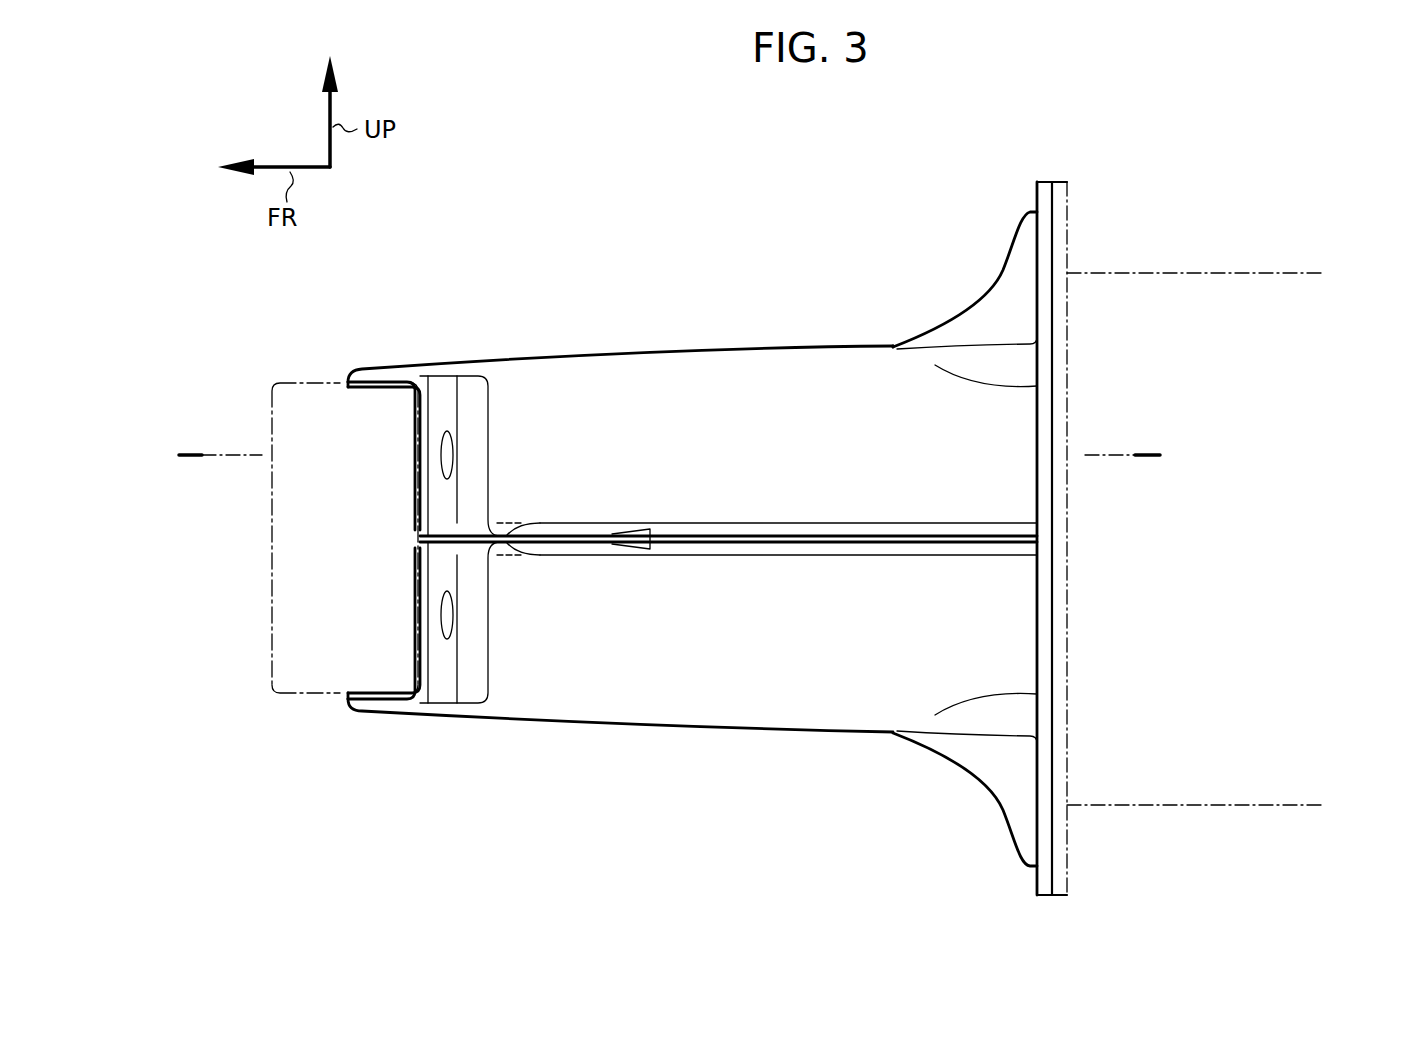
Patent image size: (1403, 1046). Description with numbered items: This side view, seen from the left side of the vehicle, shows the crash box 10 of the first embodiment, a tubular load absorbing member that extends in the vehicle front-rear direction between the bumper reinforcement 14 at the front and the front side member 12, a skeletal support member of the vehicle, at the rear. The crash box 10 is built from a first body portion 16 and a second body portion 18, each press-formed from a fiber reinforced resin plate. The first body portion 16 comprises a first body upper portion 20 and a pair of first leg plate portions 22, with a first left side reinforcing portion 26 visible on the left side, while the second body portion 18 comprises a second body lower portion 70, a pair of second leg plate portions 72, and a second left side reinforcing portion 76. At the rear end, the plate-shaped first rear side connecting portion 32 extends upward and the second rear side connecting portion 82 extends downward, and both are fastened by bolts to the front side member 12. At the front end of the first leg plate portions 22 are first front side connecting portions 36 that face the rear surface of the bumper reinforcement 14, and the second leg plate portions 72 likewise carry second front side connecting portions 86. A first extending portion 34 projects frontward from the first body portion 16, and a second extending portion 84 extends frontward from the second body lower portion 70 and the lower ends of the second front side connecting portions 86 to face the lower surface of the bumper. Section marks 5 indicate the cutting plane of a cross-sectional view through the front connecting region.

The section line 5- 5 is at (190, 451).
The crash box 10 is at (897, 220).
The front side member 12 is at (1188, 272).
The bumper reinforcement 14 is at (318, 698).
The first body portion 16 is at (742, 364).
The second body portion 18 is at (742, 710).
The first body upper portion 20 is at (732, 348).
The first leg plate portions 22 is at (799, 462).
The first left side reinforcing portion 26 is at (728, 542).
The first rear side connecting portion 32 is at (1067, 208).
The first extending portion 34 is at (392, 361).
The first front side connecting portions 36 is at (446, 404).
The second body lower portion 70 is at (640, 725).
The second leg plate portions 72 is at (797, 651).
The second left side reinforcing portion 76 is at (887, 560).
The second rear side connecting portion 82 is at (1067, 828).
The second extending portion 84 is at (359, 707).
The second front side connecting portions 86 is at (446, 667).